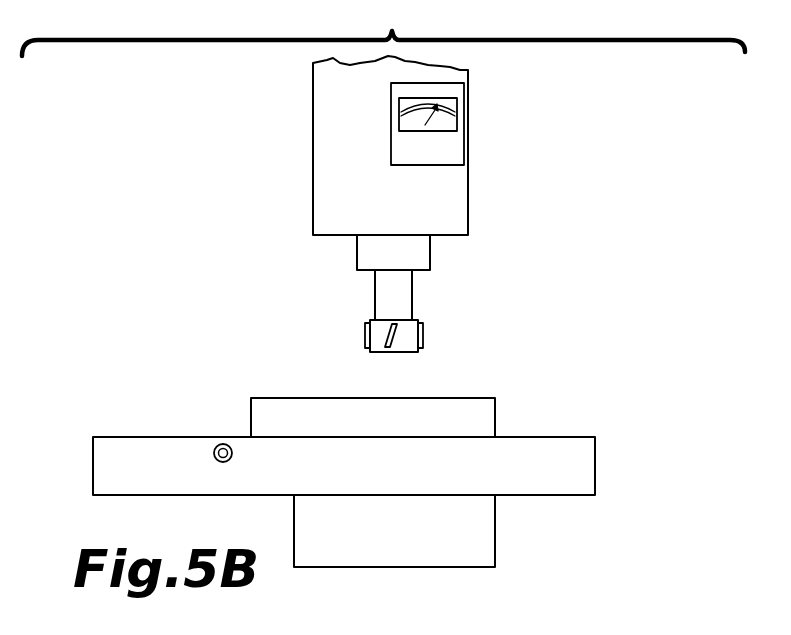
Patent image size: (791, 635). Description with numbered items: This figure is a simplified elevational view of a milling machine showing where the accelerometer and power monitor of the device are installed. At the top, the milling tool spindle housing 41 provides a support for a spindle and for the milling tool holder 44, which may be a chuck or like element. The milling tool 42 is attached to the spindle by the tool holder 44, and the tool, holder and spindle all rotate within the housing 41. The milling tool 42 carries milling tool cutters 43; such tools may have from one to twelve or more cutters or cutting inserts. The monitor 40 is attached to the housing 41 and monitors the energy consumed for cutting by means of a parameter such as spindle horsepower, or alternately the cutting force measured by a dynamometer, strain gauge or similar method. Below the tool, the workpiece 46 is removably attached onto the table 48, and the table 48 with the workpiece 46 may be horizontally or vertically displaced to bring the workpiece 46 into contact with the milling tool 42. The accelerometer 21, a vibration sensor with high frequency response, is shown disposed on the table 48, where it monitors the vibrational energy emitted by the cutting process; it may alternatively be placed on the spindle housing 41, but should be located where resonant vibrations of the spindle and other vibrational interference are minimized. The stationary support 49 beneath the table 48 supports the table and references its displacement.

The accelerometer 21 is at (213, 449).
The monitor 40 is at (458, 145).
The milling tool spindle housing 41 is at (318, 158).
The milling tool 42 is at (412, 292).
The milling tool cutters 43 is at (395, 350).
The milling tool holder 44 is at (430, 258).
The workpiece 46 is at (251, 413).
The table 48 is at (590, 463).
The stationary support 49 is at (490, 530).